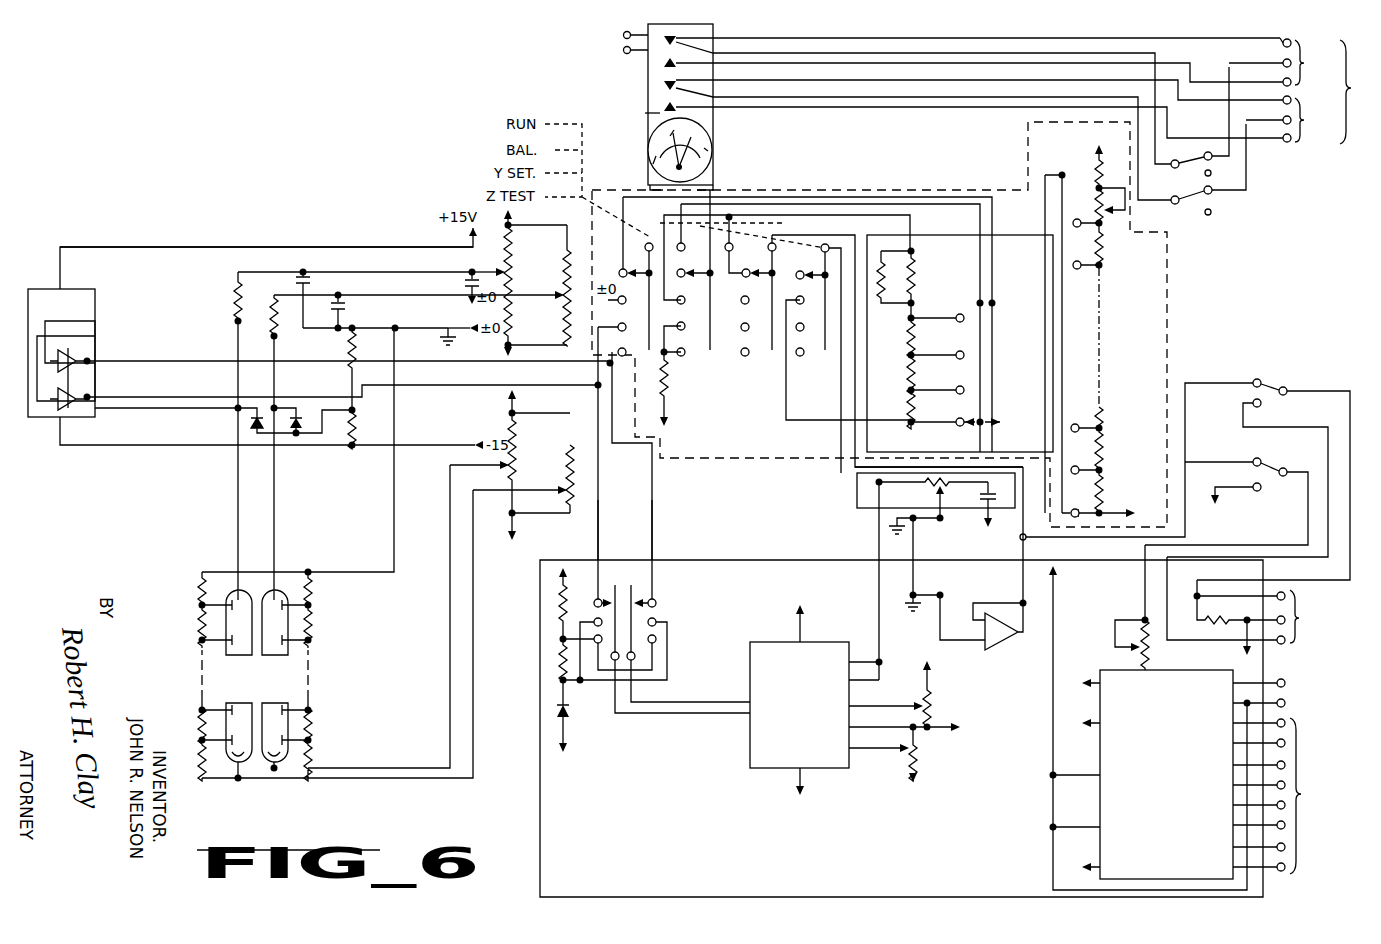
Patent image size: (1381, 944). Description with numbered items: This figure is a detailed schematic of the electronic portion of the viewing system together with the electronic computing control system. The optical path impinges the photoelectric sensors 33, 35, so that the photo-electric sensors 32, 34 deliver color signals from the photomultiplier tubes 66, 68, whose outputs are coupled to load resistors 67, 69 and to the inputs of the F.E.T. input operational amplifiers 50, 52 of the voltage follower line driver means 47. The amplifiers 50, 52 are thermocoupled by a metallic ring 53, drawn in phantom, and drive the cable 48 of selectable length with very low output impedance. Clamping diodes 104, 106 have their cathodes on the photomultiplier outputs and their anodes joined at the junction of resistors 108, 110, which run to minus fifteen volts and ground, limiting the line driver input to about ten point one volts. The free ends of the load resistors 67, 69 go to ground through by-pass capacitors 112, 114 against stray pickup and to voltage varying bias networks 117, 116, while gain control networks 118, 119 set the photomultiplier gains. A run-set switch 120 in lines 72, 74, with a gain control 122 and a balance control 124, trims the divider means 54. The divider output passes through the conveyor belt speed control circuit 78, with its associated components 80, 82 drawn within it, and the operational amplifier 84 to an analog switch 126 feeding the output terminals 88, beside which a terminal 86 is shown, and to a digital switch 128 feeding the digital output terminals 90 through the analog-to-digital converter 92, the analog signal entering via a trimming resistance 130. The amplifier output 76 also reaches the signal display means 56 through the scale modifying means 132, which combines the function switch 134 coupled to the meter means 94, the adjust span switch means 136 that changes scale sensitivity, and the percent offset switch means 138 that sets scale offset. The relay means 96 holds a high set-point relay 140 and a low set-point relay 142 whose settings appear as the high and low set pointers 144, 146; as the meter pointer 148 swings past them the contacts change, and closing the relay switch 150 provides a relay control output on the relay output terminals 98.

The photo-electric sensor 32 is at (200, 668).
The photoelectric sensor 33 is at (232, 755).
The photo-electric sensor 34 is at (313, 668).
The photoelectric sensor 35 is at (272, 755).
The line driver means 47 is at (83, 284).
The cable 48 is at (378, 243).
The F.E.T. input operational amplifier 50 is at (88, 353).
The F.E.T. input operational amplifier 52 is at (88, 405).
The metallic ring 53 is at (75, 372).
The divider means 54 is at (765, 770).
The signal display means 56 is at (647, 150).
The photomultiplier tube 66 is at (222, 703).
The load resistor 67 is at (232, 289).
The photomultiplier tube 68 is at (290, 703).
The load resistor 69 is at (278, 329).
The line 72 is at (651, 532).
The line 74 is at (597, 532).
The output 76 is at (877, 607).
The conveyor belt speed control circuit 78 is at (852, 495).
The filter potentiometer 80 is at (932, 485).
The filter capacitor 82 is at (982, 505).
The F.E.T. input operational amplifier 84 is at (998, 643).
The reference terminal 86 is at (1240, 643).
The output terminals 88 is at (1246, 600).
The digital output terminals 90 is at (1303, 776).
The analog-to-digital converter 92 is at (1092, 790).
The meter means 94 is at (646, 113).
The relay means 96 is at (648, 77).
The relay output terminals 98 is at (1301, 84).
The clamping diode 104 is at (250, 426).
The clamping diode 106 is at (300, 433).
The resistor 108 is at (356, 430).
The resistor 110 is at (360, 346).
The by-pass capacitor 112 is at (305, 272).
The by-pass capacitor 114 is at (348, 312).
The voltage varying bias network 116 is at (560, 282).
The voltage varying bias network 117 is at (517, 262).
The gain control network 118 is at (580, 461).
The gain control network 119 is at (526, 437).
The run-set switch 120 is at (668, 615).
The gain control 122 is at (924, 756).
The balance control 124 is at (936, 705).
The analog switch 126 is at (1270, 380).
The digital switch 128 is at (1272, 460).
The trimming resistance 130 is at (1135, 652).
The scale modifying means 132 is at (730, 462).
The function switch 134 is at (722, 365).
The adjust span switch means 136 is at (1005, 294).
The percent offset switch means 138 is at (1110, 282).
The high set-point relay 140 is at (725, 46).
The low set-point relay 142 is at (700, 88).
The high set pointer 144 is at (710, 146).
The low set pointer 146 is at (690, 126).
The meter pointer 148 is at (655, 166).
The relay switch 150 is at (1188, 204).